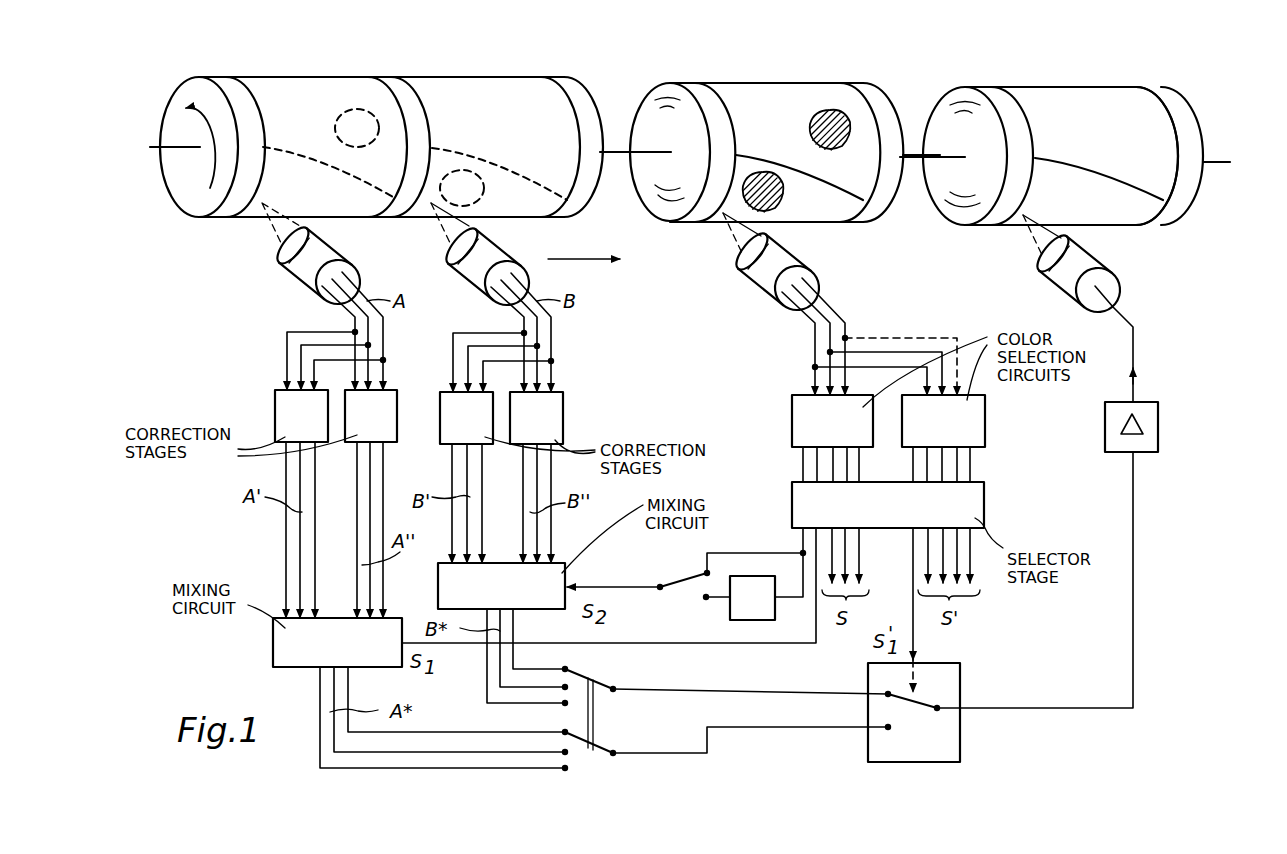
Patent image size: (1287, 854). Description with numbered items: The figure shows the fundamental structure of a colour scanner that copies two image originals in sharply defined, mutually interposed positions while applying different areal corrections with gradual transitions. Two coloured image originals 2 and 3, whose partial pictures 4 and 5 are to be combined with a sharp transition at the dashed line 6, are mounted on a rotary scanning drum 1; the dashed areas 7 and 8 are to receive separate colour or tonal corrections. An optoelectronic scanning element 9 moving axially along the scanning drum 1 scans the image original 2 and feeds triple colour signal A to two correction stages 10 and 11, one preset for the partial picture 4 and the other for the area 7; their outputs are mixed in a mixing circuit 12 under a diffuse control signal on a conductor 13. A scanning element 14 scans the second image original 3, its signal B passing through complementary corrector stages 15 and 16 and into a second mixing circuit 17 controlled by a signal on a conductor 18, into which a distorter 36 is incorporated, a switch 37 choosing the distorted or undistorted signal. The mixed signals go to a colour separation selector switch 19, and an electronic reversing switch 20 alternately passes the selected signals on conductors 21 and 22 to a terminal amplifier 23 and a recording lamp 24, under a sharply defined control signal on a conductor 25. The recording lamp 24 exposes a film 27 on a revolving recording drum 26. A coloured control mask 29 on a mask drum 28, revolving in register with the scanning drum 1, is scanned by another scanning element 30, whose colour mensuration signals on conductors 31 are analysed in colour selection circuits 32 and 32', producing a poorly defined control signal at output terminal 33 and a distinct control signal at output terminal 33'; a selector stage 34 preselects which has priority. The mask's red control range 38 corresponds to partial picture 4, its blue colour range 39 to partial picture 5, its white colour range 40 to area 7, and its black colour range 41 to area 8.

The rotary scanning drum 1 is at (196, 205).
The first coloured image original 2 is at (266, 77).
The second coloured image original 3 is at (476, 77).
The partial picture 4 is at (296, 102).
The partial picture 5 is at (528, 204).
The dashed line 6 is at (336, 168).
The area 7 is at (352, 112).
The area 8 is at (477, 198).
The optoelectronic scanning element 9 is at (287, 270).
The correction stage 10 is at (292, 418).
The correction stage 11 is at (388, 408).
The mixing circuit 12 is at (290, 641).
The conductor 13 is at (443, 646).
The scanning element 14 is at (457, 270).
The corrector stage 15 is at (446, 425).
The corrector stage 16 is at (556, 420).
The second mixing circuit 17 is at (558, 578).
The conductor 18 is at (627, 585).
The colour separation selector switch 19 is at (572, 669).
The electronic reversing switch 20 is at (888, 750).
The conductor 21 is at (800, 688).
The conductor 22 is at (737, 728).
The terminal amplifier 23 is at (1113, 438).
The recording lamp 24 is at (1057, 277).
The conductor 25 is at (912, 580).
The recording drum 26 is at (950, 190).
The film 27 is at (1100, 87).
The mask drum 28 is at (668, 180).
The coloured control mask 29 is at (750, 83).
The optoelectronic scanning element 30 is at (747, 270).
The conductors 31 is at (808, 324).
The colour selection circuit 32 is at (799, 421).
The colour selection circuit 32' is at (965, 421).
The output terminal 33 is at (792, 464).
The output terminal 33' is at (972, 464).
The selector stage 34 is at (975, 508).
The distorter 36 is at (748, 600).
The switch 37 is at (672, 580).
The control range 38 is at (797, 98).
The colour range 39 is at (828, 205).
The colour range 40 is at (853, 118).
The colour range 41 is at (773, 213).